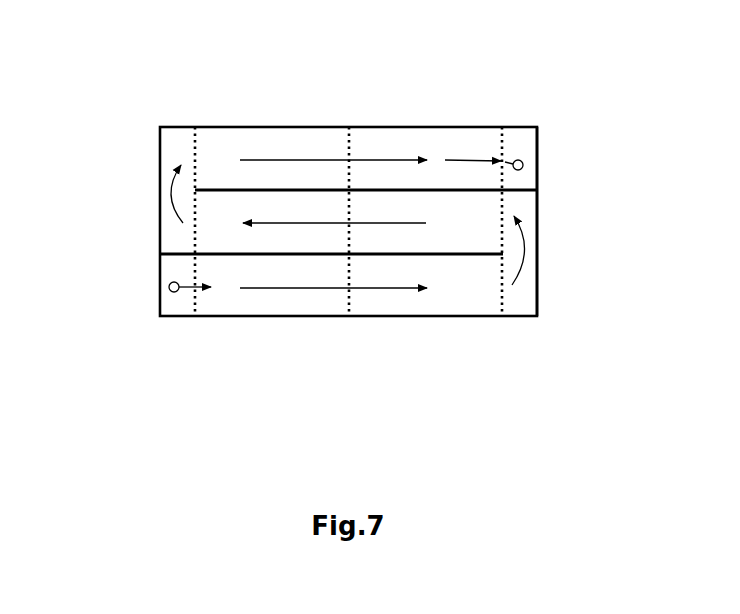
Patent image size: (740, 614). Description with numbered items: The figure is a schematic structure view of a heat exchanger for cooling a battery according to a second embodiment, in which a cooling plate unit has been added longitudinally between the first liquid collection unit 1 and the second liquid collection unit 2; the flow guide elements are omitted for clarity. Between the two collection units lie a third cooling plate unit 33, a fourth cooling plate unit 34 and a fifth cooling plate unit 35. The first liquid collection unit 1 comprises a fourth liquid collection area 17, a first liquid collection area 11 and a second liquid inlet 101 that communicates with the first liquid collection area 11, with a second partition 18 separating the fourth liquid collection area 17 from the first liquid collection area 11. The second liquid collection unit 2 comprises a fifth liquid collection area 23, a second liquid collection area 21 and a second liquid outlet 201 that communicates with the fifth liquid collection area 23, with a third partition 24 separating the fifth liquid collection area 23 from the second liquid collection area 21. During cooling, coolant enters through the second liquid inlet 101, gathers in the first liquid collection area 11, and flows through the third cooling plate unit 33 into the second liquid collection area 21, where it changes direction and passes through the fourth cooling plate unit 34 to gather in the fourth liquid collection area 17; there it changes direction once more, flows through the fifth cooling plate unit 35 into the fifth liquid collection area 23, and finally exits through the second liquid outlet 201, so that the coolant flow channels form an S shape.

The first liquid collection unit 1 is at (160, 138).
The second liquid collection unit 2 is at (540, 137).
The first liquid collection area 11 is at (178, 305).
The fourth liquid collection area 17 is at (180, 140).
The second partition 18 is at (162, 253).
The second liquid collection area 21 is at (518, 292).
The fifth liquid collection area 23 is at (509, 143).
The third partition 24 is at (515, 195).
The third cooling plate unit 33 is at (287, 298).
The fourth cooling plate unit 34 is at (292, 210).
The fifth cooling plate unit 35 is at (256, 142).
The second liquid inlet 101 is at (167, 288).
The second liquid outlet 201 is at (522, 170).